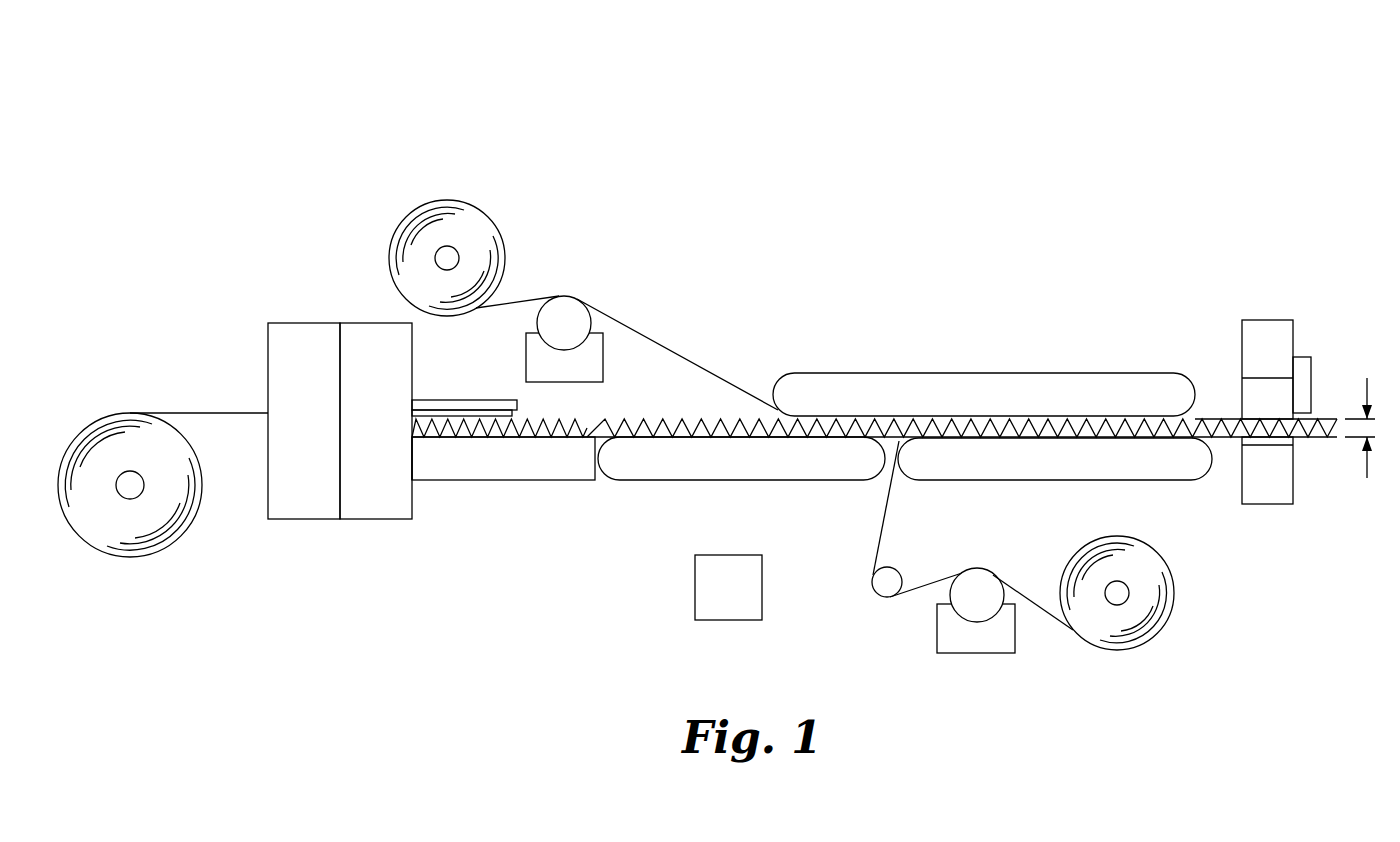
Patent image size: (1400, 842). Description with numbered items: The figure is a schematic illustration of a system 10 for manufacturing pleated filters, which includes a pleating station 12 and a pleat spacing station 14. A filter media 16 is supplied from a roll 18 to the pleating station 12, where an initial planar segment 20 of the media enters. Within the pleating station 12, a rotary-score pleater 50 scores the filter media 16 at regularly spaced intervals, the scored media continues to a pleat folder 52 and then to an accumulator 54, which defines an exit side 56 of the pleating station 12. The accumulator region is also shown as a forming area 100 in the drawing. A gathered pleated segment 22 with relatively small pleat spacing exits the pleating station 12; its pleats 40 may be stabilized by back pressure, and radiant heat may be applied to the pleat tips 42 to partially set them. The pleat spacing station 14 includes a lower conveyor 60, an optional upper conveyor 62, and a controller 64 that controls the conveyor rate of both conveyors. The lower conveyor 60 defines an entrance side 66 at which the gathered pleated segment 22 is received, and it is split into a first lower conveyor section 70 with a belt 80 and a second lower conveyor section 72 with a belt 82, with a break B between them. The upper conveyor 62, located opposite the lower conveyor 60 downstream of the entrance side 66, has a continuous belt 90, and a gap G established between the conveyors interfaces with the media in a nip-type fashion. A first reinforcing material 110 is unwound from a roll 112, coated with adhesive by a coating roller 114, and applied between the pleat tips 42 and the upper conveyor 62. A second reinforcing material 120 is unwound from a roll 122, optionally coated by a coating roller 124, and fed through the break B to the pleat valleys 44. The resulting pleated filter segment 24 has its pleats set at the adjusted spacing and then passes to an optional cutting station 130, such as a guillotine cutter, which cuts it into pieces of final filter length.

The system 10 is at (1073, 167).
The pleating station 12 is at (340, 436).
The pleat spacing station 14 is at (984, 342).
The filter media 16 is at (163, 464).
The roll 18 is at (105, 535).
The initial planar segment 20 is at (223, 416).
The gathered pleated segment 22 is at (508, 438).
The pleated filter segment 24 is at (837, 433).
The pleats 40 is at (637, 417).
The pleat tips 42 is at (757, 420).
The pleat valleys 44 is at (975, 433).
The rotary-score pleater 50 is at (300, 333).
The pleat folder 52 is at (368, 497).
The accumulator 54 is at (440, 450).
The exit side 56 is at (558, 403).
The lower conveyor 60 is at (739, 561).
The upper conveyor 62 is at (984, 358).
The controller 64 is at (725, 610).
The entrance side 66 is at (600, 477).
The first lower conveyor section 70 is at (739, 490).
The second lower conveyor section 72 is at (1064, 483).
The belt 80 is at (874, 426).
The belt 82 is at (1212, 457).
The belt 90 is at (1085, 373).
The forming station 100 is at (503, 498).
The first reinforcing material 110 is at (583, 305).
The roll 112 is at (485, 222).
The coating roller 114 is at (570, 303).
The second reinforcing material 120 is at (1087, 609).
The roll 122 is at (1157, 562).
The coating roller 124 is at (978, 580).
The cutting station 130 is at (1268, 308).
The break B is at (888, 470).
The gap G is at (1365, 380).